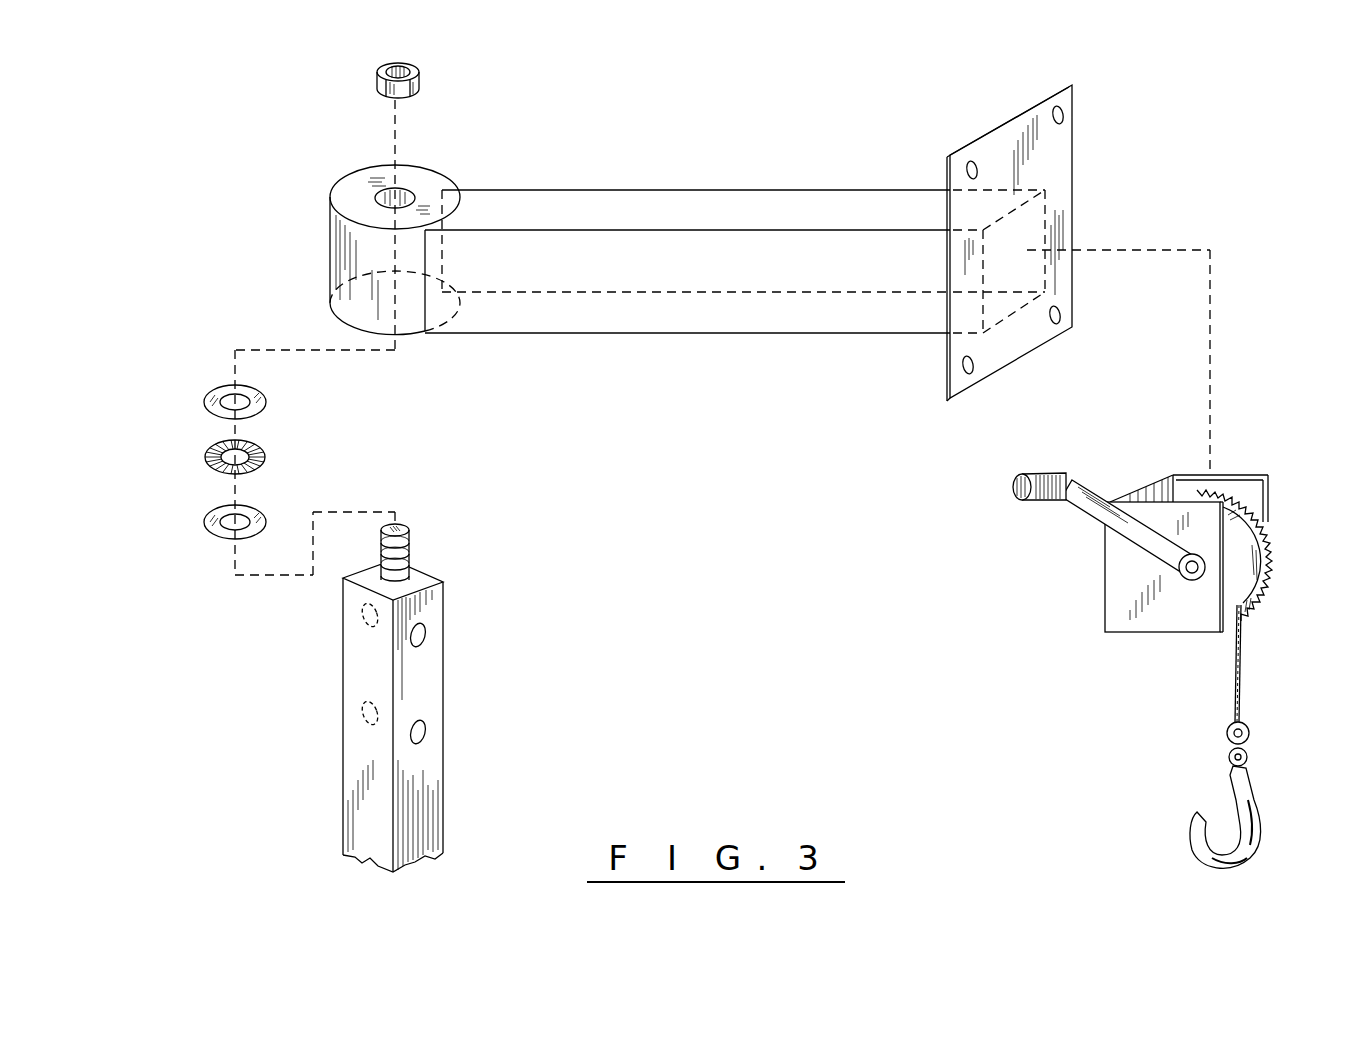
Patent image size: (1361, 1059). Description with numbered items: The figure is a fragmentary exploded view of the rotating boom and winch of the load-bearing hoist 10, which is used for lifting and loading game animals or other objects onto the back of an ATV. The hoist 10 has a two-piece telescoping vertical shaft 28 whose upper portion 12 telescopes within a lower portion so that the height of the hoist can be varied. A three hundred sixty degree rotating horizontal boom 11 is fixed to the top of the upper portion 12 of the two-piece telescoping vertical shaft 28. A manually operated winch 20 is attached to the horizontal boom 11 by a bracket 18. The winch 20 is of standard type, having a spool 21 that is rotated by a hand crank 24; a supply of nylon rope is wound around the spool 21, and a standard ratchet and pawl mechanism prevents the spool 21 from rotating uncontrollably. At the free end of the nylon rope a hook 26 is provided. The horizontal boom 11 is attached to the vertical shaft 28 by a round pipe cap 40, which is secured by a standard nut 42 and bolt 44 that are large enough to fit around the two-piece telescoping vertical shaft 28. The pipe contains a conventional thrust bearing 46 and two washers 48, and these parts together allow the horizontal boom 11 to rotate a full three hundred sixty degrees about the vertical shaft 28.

The load-bearing hoist 10 is at (748, 120).
The rotating horizontal boom 11 is at (580, 333).
The upper portion 12 is at (343, 674).
The bracket 18 is at (1074, 155).
The manually operated winch 20 is at (1114, 670).
The spool 21 is at (1273, 545).
The hand crank 24 is at (1008, 486).
The hook 26 is at (1256, 822).
The two-piece telescoping vertical shaft 28 is at (490, 658).
The round pipe cap 40 is at (430, 168).
The nut 42 is at (420, 77).
The bolt 44 is at (410, 546).
The thrust bearing 46 is at (263, 455).
The washers 48 is at (205, 402).